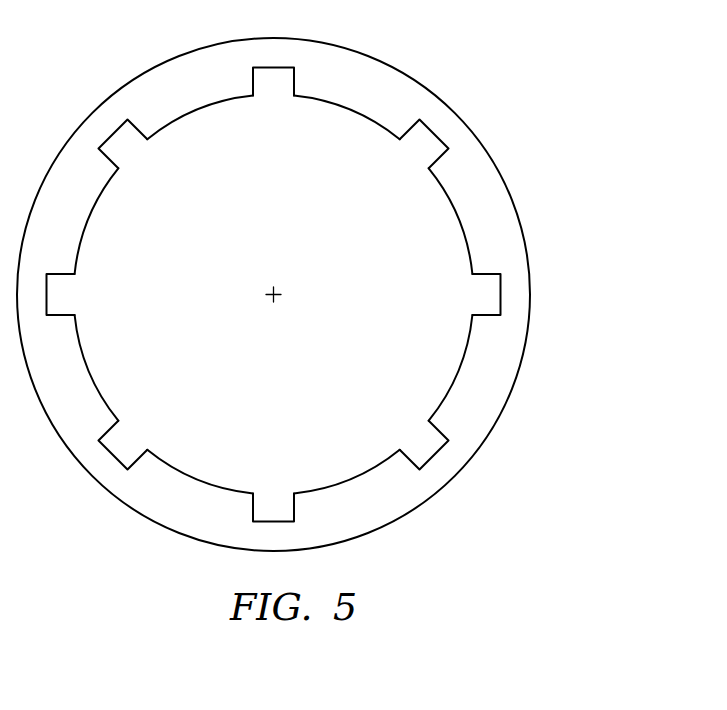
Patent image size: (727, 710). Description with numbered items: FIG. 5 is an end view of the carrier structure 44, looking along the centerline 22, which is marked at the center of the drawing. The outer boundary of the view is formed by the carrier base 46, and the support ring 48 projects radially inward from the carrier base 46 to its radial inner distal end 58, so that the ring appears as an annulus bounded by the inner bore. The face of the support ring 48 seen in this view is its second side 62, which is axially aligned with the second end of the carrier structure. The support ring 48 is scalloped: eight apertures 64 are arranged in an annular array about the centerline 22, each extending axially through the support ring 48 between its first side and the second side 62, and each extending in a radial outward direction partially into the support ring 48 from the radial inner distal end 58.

The centerline 22 is at (280, 298).
The locking ring 44 is at (301, 285).
The carrier base 46 is at (508, 205).
The support ring 48 is at (473, 242).
The radial inner distal end 58 is at (90, 370).
The second side 62 is at (301, 285).
The apertures 64 is at (423, 150).